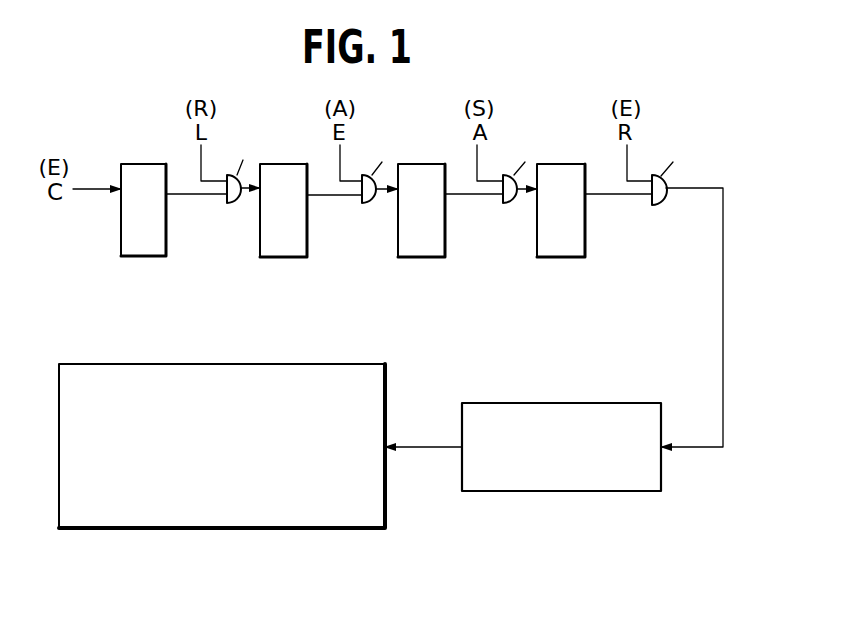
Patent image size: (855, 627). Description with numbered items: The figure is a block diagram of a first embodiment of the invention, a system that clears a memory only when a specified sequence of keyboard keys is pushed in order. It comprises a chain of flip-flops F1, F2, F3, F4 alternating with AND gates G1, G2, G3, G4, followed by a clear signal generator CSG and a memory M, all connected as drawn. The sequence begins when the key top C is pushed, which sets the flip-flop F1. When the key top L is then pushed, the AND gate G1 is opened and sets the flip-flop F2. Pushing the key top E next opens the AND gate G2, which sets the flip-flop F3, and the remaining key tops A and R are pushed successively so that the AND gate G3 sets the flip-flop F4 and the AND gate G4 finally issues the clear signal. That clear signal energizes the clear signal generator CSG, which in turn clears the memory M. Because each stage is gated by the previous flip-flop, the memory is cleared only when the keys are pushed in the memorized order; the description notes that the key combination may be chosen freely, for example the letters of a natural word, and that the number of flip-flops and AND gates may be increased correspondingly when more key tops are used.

The flip-flop F1 is at (140, 256).
The flip-flop F2 is at (278, 257).
The flip-flop F3 is at (416, 257).
The flip-flop F4 is at (556, 257).
The AND gate G1 is at (225, 203).
The AND gate G2 is at (366, 203).
The AND gate G3 is at (507, 203).
The AND gate G4 is at (655, 205).
The memory M is at (212, 528).
The clear signal generator CSG is at (553, 491).